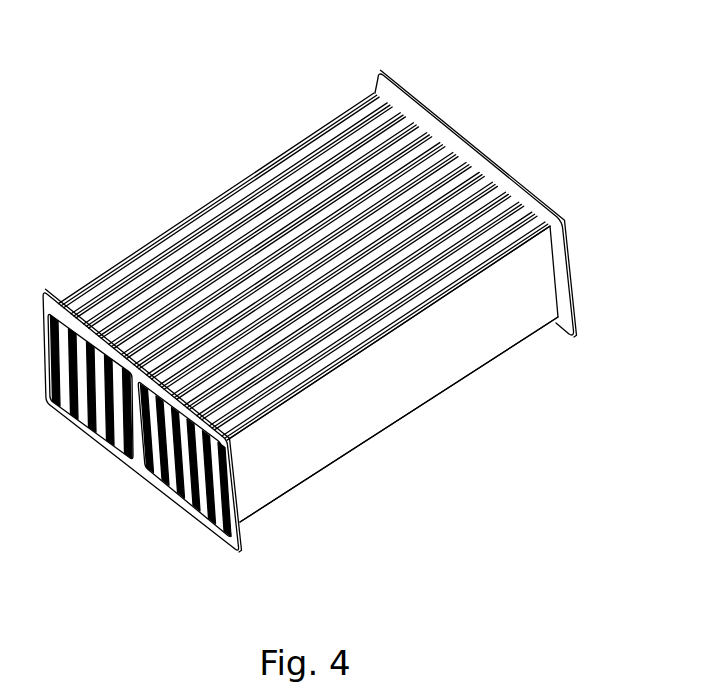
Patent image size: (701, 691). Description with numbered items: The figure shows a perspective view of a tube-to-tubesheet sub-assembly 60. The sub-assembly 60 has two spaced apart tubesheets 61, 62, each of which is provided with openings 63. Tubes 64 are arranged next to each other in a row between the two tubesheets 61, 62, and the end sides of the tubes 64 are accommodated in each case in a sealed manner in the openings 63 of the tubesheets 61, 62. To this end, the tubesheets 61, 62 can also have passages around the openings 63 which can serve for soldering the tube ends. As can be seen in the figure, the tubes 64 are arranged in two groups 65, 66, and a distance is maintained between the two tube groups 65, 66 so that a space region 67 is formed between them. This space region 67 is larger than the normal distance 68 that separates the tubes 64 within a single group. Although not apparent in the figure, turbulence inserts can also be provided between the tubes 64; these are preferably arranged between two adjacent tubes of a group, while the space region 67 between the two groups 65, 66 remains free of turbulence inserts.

The tube-to-tubesheet sub-assembly 60 is at (435, 88).
The tubesheet 61 is at (229, 540).
The tubesheet 62 is at (565, 250).
The openings 63 is at (152, 482).
The tubes 64 is at (327, 407).
The tube group 65 is at (476, 356).
The tube group 66 is at (228, 178).
The space region 67 is at (467, 172).
The normal distance 68 is at (523, 193).